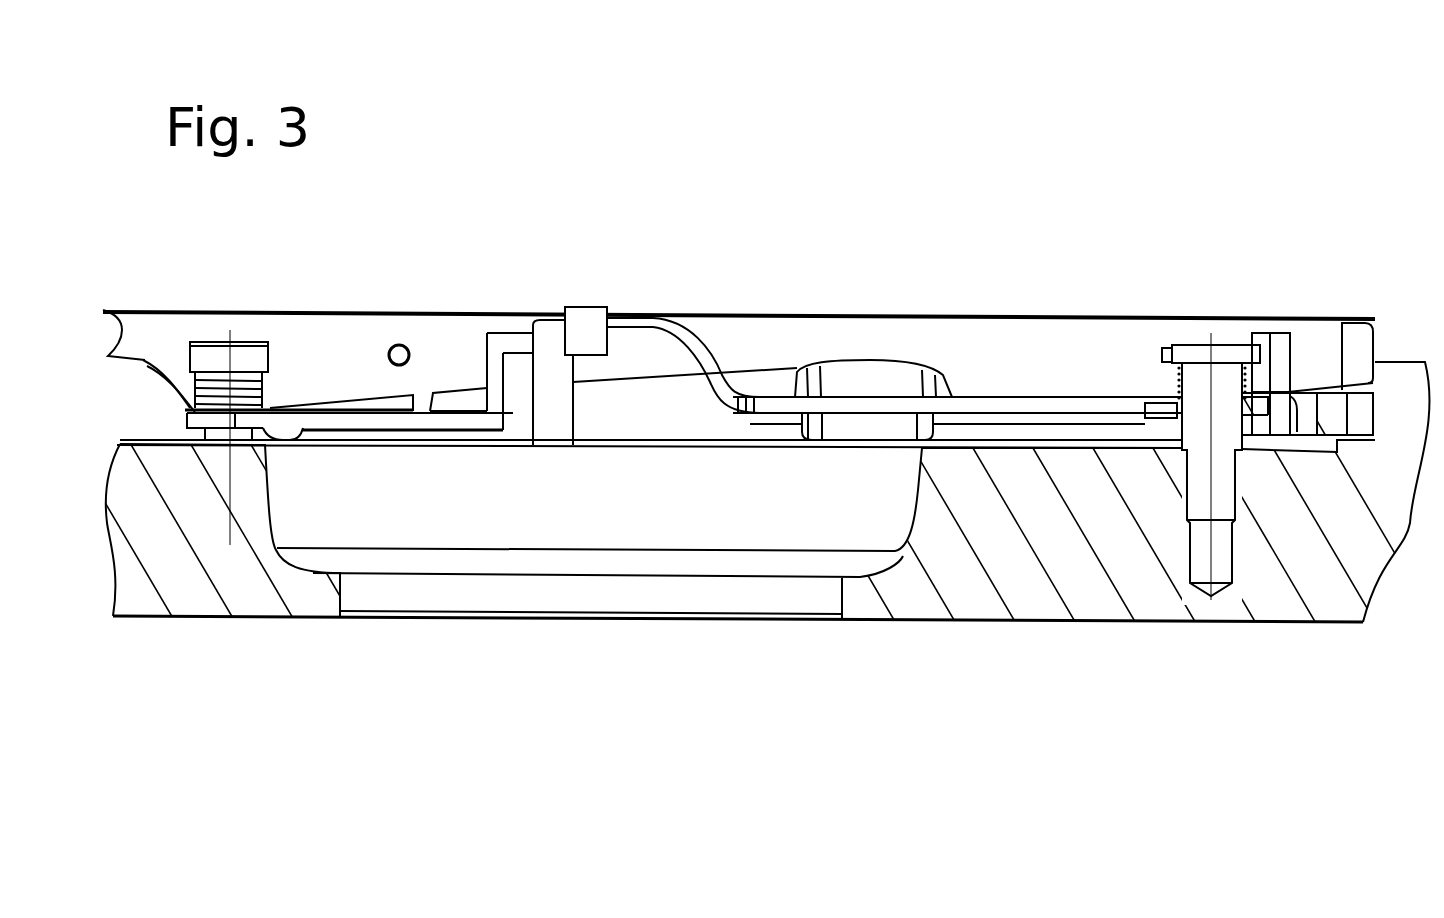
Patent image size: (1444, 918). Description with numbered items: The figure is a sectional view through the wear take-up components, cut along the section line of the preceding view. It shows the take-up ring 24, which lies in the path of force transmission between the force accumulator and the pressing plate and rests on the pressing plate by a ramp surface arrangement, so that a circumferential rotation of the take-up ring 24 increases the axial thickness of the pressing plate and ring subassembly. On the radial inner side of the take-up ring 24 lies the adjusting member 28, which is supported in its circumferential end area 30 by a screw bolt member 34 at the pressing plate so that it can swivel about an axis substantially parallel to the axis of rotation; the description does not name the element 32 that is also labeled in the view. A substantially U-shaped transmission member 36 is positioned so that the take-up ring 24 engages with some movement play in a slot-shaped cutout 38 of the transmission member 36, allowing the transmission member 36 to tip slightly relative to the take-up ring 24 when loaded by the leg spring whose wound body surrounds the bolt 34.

The take-up ring 24 is at (318, 338).
The adjusting member 28 is at (1000, 397).
The circumferential end area 30 is at (1077, 357).
The clamping strap 32 is at (693, 332).
The screw bolt member 34 is at (1200, 387).
The transmission member 36 is at (1377, 327).
The slot-shaped cutout 38 is at (1307, 347).